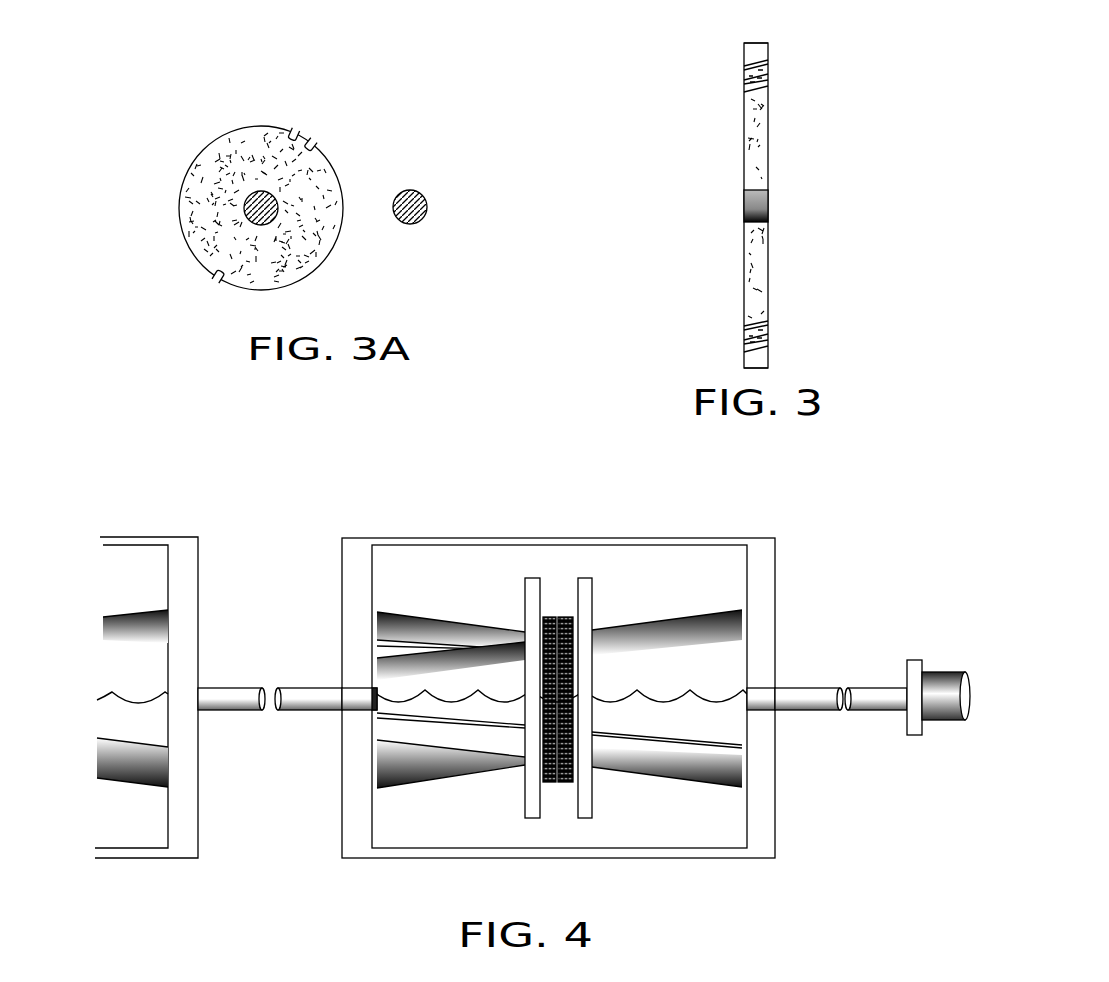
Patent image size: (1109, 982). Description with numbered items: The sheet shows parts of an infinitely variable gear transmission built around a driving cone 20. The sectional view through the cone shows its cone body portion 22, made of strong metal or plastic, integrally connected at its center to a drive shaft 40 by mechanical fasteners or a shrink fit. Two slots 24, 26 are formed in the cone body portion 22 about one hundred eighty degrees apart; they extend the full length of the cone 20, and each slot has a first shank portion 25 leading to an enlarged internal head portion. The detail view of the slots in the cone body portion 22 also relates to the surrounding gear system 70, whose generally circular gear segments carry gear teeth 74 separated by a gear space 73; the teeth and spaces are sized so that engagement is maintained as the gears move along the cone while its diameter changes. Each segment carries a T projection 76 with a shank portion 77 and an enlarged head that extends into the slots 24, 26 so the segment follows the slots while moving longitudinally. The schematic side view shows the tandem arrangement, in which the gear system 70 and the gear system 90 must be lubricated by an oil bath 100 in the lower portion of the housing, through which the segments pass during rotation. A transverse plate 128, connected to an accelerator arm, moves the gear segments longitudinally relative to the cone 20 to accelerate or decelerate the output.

In FIG. 3A, the driving cone 20 is at (260, 194).
In FIG. 3A, the cone body portion 22 is at (208, 172).
In FIG. 3, the cone body portion 22 is at (762, 143).
In FIG. 3A, the slot 24 is at (292, 130).
In FIG. 3A, the first shank portion 25 is at (318, 147).
In FIG. 3A, the slot 26 is at (221, 283).
In FIG. 3A, the drive shaft 40 is at (245, 212).
In FIG. 3, the gear space 73 is at (762, 53).
In FIG. 3, the gear teeth 74 is at (752, 43).
In FIG. 3, the T projection 76 is at (772, 186).
In FIG. 3, the shank portion 77 is at (762, 345).
In FIG. 4, the surrounding gear system 70 is at (551, 782).
In FIG. 4, the gear system 90 is at (729, 699).
In FIG. 4, the oil bath 100 is at (378, 698).
In FIG. 4, the transverse plate 128 is at (587, 603).